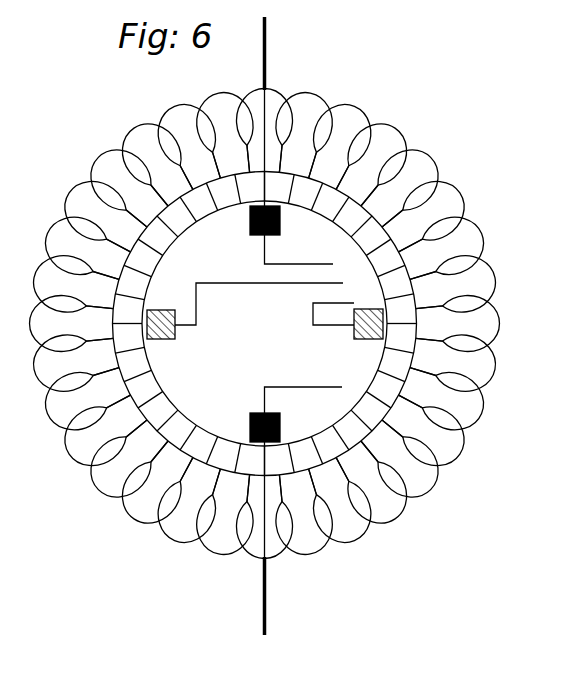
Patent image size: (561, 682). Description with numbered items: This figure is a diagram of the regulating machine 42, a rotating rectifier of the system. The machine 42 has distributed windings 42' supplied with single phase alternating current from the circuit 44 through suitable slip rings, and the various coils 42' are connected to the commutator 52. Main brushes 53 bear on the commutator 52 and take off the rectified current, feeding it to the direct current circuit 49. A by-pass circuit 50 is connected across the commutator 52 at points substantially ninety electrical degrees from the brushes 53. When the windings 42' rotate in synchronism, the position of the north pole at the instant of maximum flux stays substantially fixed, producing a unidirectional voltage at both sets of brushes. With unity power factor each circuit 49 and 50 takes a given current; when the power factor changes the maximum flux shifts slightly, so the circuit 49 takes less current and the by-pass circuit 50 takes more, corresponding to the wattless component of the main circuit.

The rectifier machine 42 is at (264, 323).
The distributed windings 42' is at (269, 324).
The supply circuit 44 is at (266, 55).
The direct current circuit 49 is at (264, 254).
The by-pass circuit 50 is at (235, 284).
The commutator 52 is at (178, 408).
The main brushes 53 is at (281, 226).